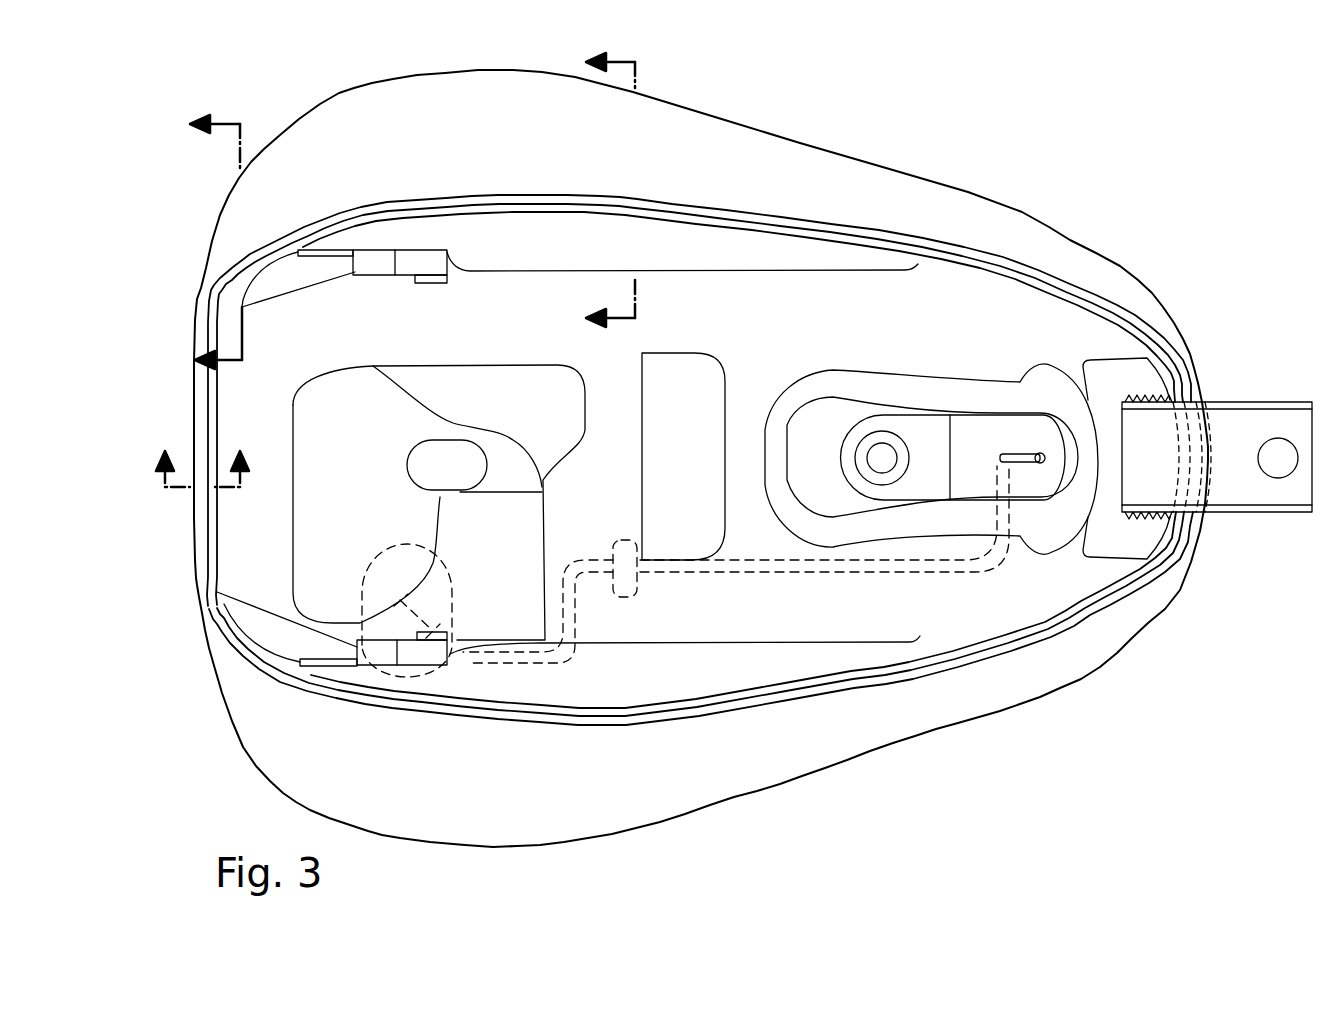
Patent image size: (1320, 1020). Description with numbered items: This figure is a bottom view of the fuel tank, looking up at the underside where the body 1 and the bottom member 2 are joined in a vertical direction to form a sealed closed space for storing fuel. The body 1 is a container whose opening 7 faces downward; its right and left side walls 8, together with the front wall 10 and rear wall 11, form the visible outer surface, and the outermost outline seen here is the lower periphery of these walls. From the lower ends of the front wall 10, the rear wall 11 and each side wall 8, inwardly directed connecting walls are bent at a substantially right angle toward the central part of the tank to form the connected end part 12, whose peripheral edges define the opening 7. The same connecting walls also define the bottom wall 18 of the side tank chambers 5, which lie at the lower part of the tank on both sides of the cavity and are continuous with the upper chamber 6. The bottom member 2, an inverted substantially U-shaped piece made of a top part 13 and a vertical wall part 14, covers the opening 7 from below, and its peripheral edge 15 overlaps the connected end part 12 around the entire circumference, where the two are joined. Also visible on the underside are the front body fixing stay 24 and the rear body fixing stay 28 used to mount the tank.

The body 1 is at (1080, 203).
The bottom member 2 is at (1022, 592).
The side tank chambers 5 is at (202, 456).
The upper chamber 6 is at (205, 231).
The opening 7 is at (600, 192).
The side wall 8 is at (882, 168).
The front wall 10 is at (201, 556).
The rear wall 11 is at (1205, 520).
The connected end part 12 is at (650, 201).
The top part 13 is at (700, 290).
The vertical wall part 14 is at (690, 265).
The peripheral edge 15 is at (677, 245).
The bottom wall 18 is at (378, 110).
The front body fixing stay 24 is at (387, 268).
The rear body fixing stay 28 is at (1253, 425).